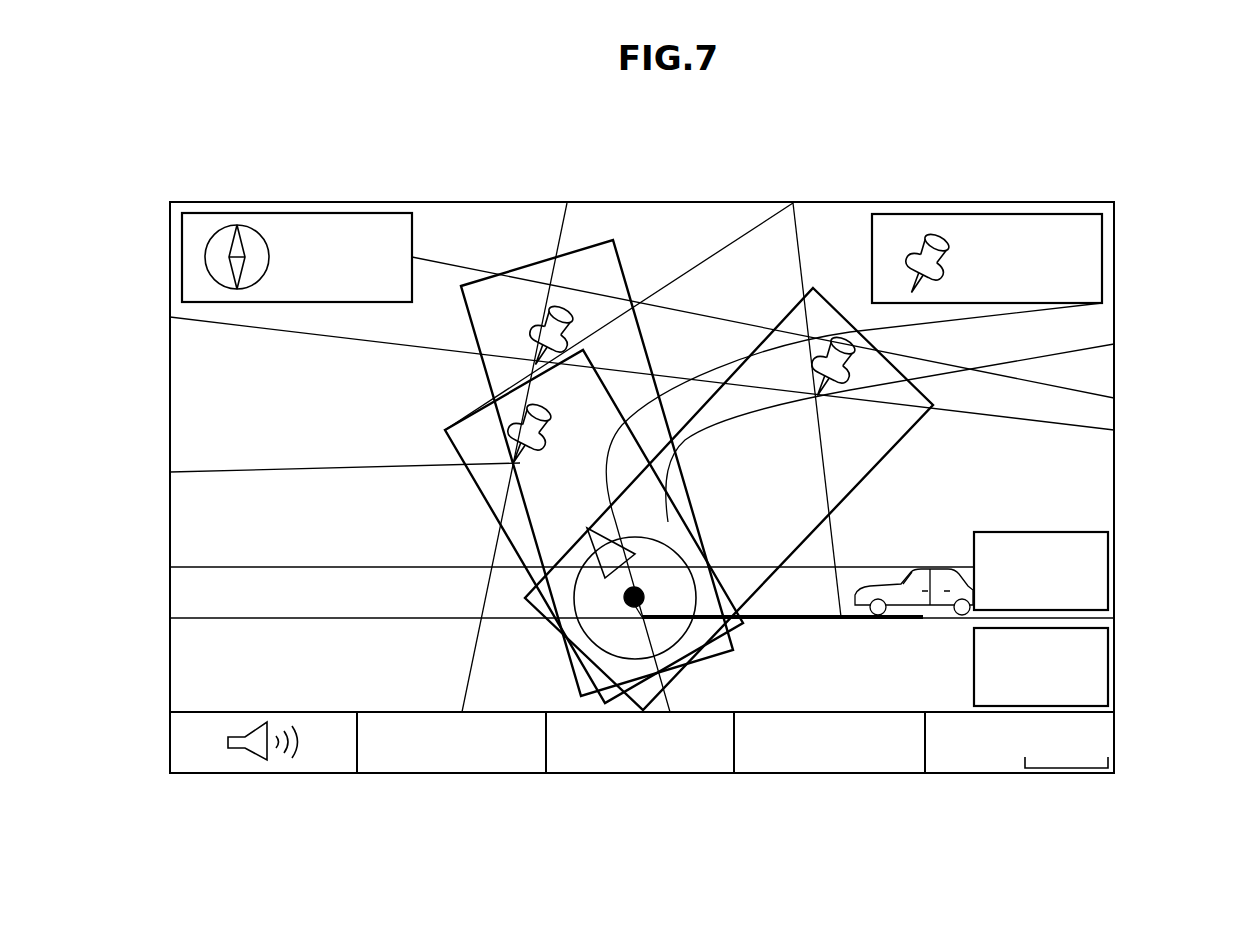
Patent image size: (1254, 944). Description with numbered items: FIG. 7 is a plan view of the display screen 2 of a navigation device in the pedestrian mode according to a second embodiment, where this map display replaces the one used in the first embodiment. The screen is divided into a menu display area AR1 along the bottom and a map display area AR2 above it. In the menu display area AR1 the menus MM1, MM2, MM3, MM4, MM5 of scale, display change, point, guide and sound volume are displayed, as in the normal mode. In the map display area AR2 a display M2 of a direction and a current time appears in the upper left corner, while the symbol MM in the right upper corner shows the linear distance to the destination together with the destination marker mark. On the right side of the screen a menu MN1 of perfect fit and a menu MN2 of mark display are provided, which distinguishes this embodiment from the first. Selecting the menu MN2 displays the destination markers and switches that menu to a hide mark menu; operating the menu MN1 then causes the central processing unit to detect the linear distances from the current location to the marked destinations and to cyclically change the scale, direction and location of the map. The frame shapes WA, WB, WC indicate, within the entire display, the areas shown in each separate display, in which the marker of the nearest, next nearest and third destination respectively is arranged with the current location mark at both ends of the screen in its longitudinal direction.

The display screen 2 is at (882, 202).
The display of a direction and a current time M2 is at (282, 213).
The linear distance display MM is at (985, 214).
The display screen shape for destination A WA is at (468, 481).
The display screen shape for destination B WB is at (603, 243).
The display screen shape for destination C WC is at (893, 447).
The perfect fit menu MN1 is at (1108, 583).
The mark display menu MN2 is at (1102, 667).
The menu display area AR1 is at (691, 774).
The map display area AR2 is at (700, 428).
The scale menu MM1 is at (967, 773).
The display change menu MM2 is at (766, 773).
The point menu MM3 is at (637, 773).
The guide menu MM4 is at (447, 773).
The sound volume menu MM5 is at (250, 773).